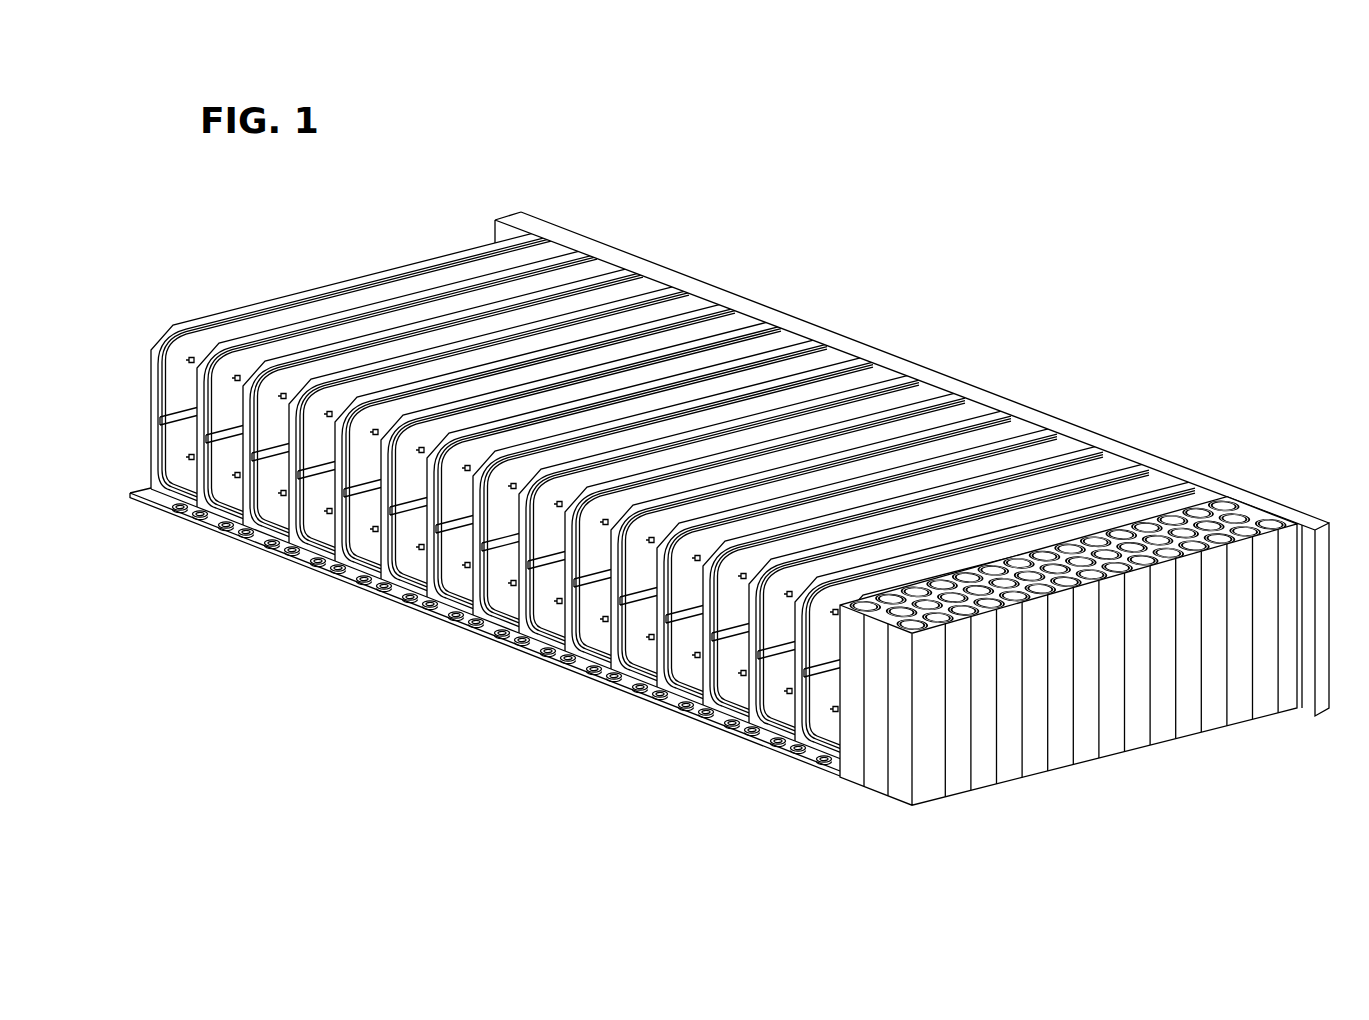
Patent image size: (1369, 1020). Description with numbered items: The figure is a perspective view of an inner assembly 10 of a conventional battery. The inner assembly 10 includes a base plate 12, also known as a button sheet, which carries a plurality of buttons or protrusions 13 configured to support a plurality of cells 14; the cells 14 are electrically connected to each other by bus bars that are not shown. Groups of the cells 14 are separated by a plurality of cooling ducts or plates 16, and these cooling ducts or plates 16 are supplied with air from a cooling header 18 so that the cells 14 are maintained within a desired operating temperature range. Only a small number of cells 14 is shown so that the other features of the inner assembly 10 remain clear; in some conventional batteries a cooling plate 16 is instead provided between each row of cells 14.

The inner assembly 10 is at (284, 246).
The base plate 12 is at (565, 668).
The buttons or protrusions 13 is at (594, 674).
The cells 14 is at (977, 745).
The cooling ducts or plates 16 is at (292, 508).
The cooling header 18 is at (1023, 409).